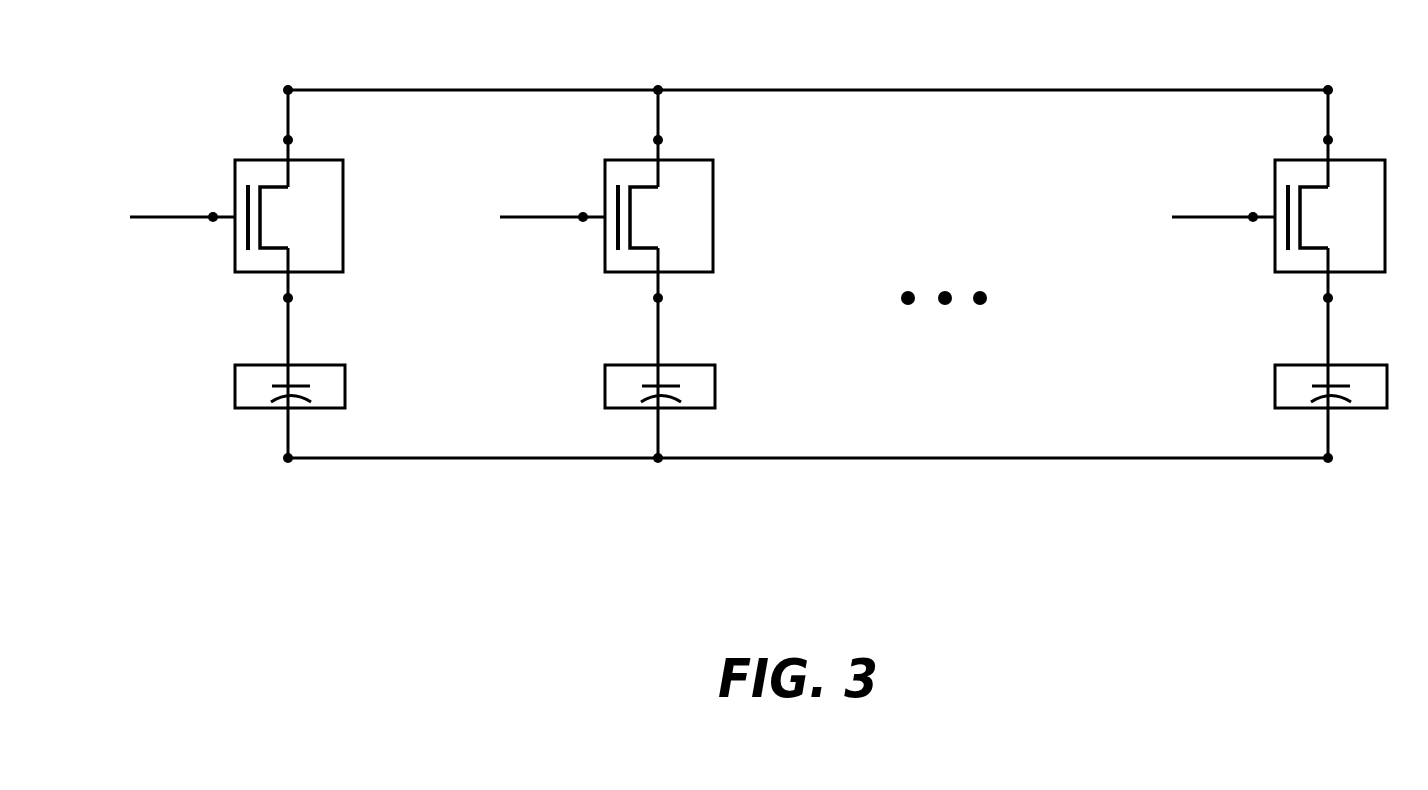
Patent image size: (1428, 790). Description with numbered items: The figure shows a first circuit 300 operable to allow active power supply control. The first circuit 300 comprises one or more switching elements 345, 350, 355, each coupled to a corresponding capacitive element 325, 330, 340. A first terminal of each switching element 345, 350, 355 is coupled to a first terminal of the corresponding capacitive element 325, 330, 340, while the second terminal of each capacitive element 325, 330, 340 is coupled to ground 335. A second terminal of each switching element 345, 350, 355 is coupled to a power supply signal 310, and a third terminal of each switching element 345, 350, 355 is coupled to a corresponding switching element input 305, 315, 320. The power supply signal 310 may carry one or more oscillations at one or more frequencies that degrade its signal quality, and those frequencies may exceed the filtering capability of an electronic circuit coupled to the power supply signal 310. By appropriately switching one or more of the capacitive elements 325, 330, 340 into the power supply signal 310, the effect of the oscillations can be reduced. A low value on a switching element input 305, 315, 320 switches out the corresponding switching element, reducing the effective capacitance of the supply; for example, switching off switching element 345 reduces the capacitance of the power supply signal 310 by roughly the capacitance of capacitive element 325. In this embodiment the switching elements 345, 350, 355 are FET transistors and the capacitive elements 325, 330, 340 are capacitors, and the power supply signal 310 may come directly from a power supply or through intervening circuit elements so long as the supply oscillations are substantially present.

The first circuit 300 is at (827, 621).
The switching element input 305 is at (152, 215).
The power supply signal 310 is at (288, 86).
The switching element input 315 is at (512, 215).
The switching element input 320 is at (1178, 215).
The capacitive element 325 is at (258, 363).
The capacitive element 330 is at (628, 363).
The ground 335 is at (288, 462).
The capacitive element 340 is at (1298, 363).
The switching element 345 is at (255, 158).
The switching element 350 is at (625, 158).
The switching element 355 is at (1295, 158).